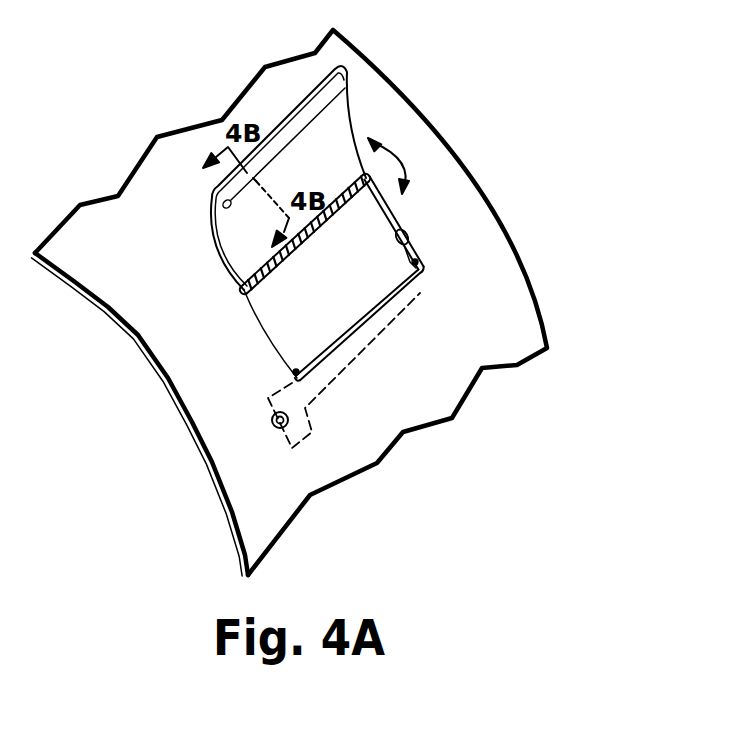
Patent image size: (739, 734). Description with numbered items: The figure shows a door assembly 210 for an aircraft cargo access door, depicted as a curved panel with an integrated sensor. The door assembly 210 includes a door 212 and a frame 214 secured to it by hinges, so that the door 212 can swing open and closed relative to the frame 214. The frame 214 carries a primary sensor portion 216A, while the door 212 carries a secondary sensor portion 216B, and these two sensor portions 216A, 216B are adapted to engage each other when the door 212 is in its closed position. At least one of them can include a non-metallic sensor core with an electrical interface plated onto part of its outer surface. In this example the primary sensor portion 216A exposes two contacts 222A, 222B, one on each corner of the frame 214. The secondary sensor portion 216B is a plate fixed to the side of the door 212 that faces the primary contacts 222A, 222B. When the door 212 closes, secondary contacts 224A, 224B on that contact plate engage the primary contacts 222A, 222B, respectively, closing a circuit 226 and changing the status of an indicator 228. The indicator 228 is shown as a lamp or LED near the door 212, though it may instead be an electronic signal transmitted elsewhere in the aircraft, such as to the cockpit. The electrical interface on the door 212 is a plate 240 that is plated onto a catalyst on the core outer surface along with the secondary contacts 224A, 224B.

The door assembly 210 is at (566, 122).
The door 212 is at (215, 286).
The frame 214 is at (255, 338).
The primary sensor portion 216A is at (402, 224).
The secondary sensor portion 216B is at (325, 130).
The primary contact 222A is at (298, 372).
The primary contact 222B is at (422, 266).
The secondary contact 224A is at (222, 205).
The secondary contact 224B is at (347, 100).
The circuit 226 is at (360, 361).
The indicator 228 is at (271, 421).
The plate 240 is at (250, 182).